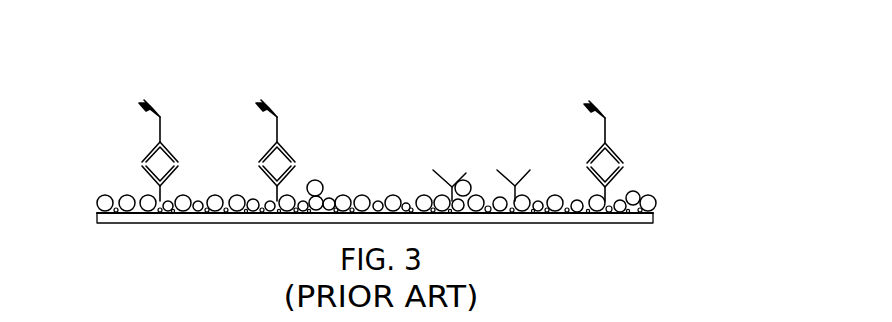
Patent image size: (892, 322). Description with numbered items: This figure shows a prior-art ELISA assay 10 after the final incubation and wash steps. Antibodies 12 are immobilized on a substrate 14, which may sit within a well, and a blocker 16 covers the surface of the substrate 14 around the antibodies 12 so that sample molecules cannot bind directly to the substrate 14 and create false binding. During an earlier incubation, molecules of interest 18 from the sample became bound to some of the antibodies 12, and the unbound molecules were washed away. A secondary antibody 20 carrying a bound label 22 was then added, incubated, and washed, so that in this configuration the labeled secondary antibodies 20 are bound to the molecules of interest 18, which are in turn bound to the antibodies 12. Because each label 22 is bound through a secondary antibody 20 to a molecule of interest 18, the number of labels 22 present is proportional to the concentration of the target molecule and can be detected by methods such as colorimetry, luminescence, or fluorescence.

The ELISA assay 10 is at (717, 125).
The antibodies 12 is at (440, 169).
The substrate 14 is at (653, 222).
The blocker 16 is at (322, 184).
The molecules of interest 18 is at (142, 164).
The secondary antibody 20 is at (161, 128).
The label 22 is at (148, 97).